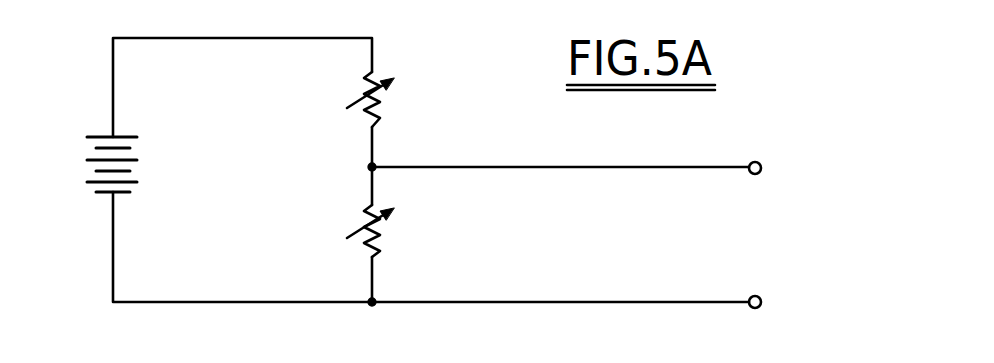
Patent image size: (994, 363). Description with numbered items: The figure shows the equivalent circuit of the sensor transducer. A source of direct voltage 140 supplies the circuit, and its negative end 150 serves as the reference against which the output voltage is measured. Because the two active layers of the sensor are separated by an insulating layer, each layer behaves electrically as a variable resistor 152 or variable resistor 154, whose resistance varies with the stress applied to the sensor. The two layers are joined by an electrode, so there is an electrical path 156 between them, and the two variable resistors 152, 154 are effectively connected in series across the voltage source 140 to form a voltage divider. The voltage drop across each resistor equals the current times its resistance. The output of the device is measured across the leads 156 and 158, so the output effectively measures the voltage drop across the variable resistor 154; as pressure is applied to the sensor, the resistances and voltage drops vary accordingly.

The voltage source 140 is at (107, 194).
The negative end of the voltage source 150 is at (113, 135).
The variable resistor 152 is at (378, 108).
The variable resistor 154 is at (378, 228).
The electrical path 156 is at (372, 152).
The lead 158 is at (761, 174).